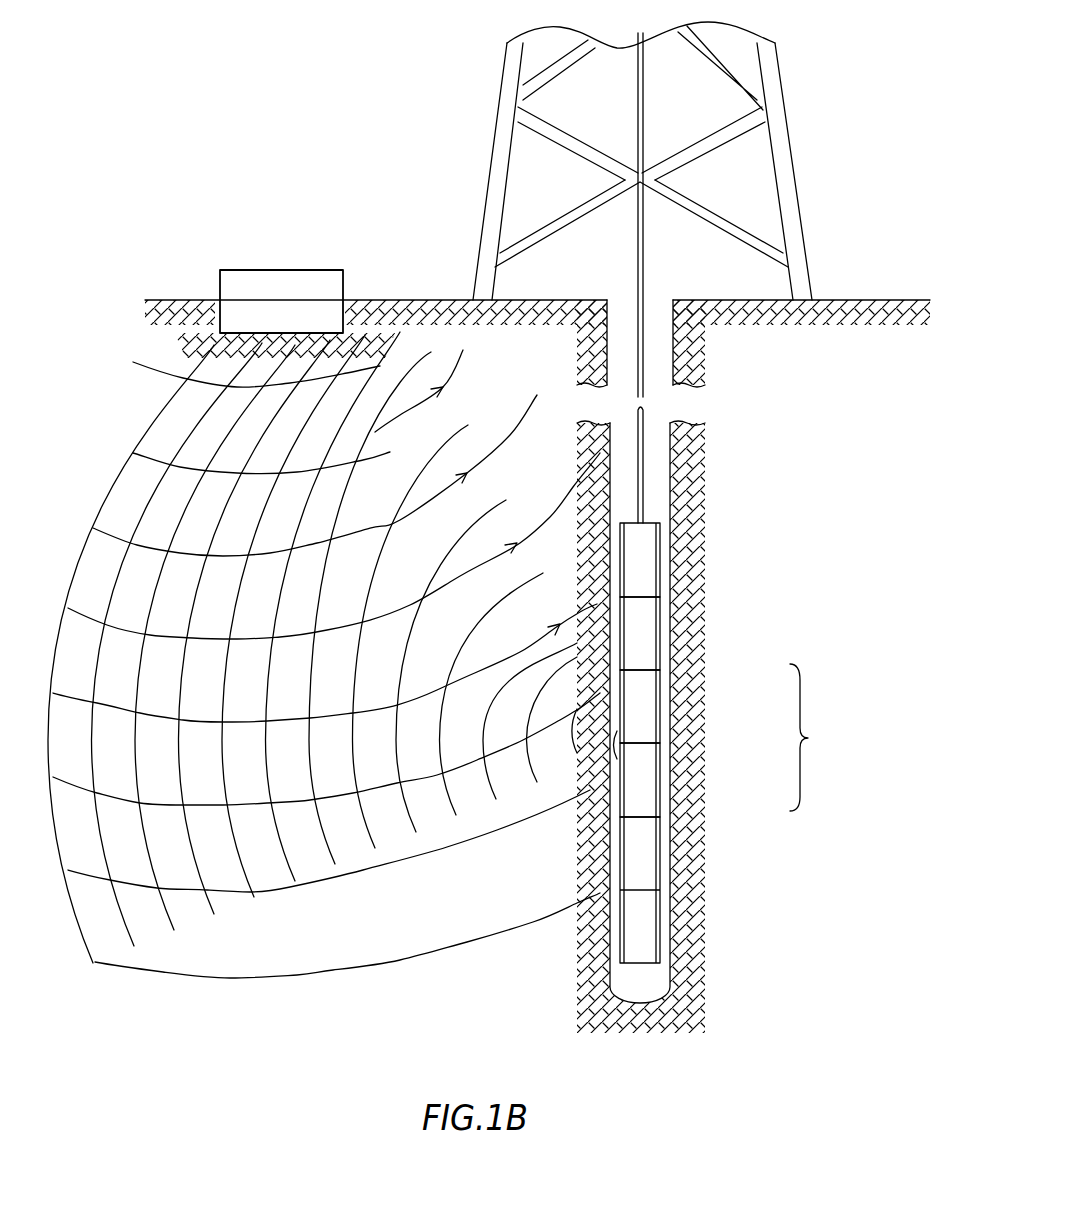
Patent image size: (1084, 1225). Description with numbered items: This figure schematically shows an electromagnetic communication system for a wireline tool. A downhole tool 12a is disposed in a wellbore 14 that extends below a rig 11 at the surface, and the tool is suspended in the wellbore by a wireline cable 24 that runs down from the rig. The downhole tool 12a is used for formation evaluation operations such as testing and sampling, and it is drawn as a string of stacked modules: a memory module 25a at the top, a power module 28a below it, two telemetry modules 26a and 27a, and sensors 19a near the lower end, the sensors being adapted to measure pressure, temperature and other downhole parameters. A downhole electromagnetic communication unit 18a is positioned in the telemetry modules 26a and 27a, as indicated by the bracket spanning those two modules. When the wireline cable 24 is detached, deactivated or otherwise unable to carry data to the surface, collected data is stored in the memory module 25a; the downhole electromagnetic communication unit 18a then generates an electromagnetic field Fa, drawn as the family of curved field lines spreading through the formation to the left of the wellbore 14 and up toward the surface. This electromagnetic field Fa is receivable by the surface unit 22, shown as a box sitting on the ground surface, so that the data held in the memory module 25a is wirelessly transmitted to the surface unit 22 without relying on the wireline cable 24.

The rig 11 is at (783, 88).
The wellbore 14 is at (682, 353).
The surface electromagnetic communication unit 22 is at (302, 318).
The wireline cable 24 is at (645, 464).
The memory module 25a is at (660, 532).
The power module 28a is at (660, 632).
The telemetry module 26a is at (663, 700).
The telemetry module 27a is at (663, 787).
The sensors 19a is at (660, 867).
The downhole electromagnetic communication unit 18a is at (808, 738).
The downhole tool 12a is at (853, 577).
The electromagnetic field Fa is at (408, 670).